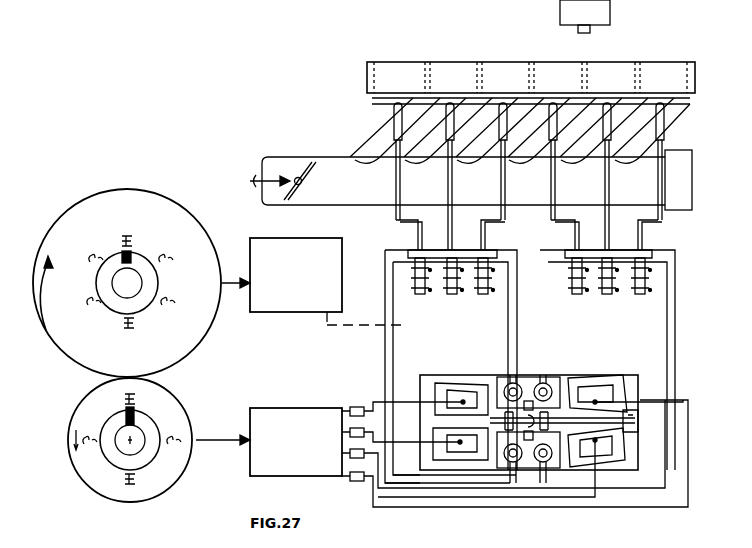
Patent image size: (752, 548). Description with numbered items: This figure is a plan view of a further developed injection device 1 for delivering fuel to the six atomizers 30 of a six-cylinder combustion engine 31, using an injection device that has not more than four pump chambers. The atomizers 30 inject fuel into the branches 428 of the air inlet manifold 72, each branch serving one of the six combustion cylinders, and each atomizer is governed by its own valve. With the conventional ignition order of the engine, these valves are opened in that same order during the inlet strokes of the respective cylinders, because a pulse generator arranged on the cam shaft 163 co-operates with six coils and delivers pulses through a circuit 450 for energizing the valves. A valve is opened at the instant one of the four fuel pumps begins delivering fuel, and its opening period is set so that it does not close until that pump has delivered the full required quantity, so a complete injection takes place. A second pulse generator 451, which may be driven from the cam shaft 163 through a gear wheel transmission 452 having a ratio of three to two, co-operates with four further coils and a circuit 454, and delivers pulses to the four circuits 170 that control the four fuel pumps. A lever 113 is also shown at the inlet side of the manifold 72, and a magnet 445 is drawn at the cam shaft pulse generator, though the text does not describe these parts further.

The injection device 1 is at (640, 383).
The atomizers 30 is at (660, 120).
The 6-cylinder combustion engine 31 is at (648, 58).
The air inlet manifold 72 is at (292, 174).
The lever 113 is at (306, 150).
The cam shaft 163 is at (127, 283).
The circuits 170 is at (364, 472).
The branches 428 is at (400, 108).
The magnet 445 is at (124, 254).
The circuit 450 is at (314, 284).
The pulse generator 451 is at (140, 410).
The gear wheel transmission 452 is at (90, 384).
The circuit 454 is at (316, 451).